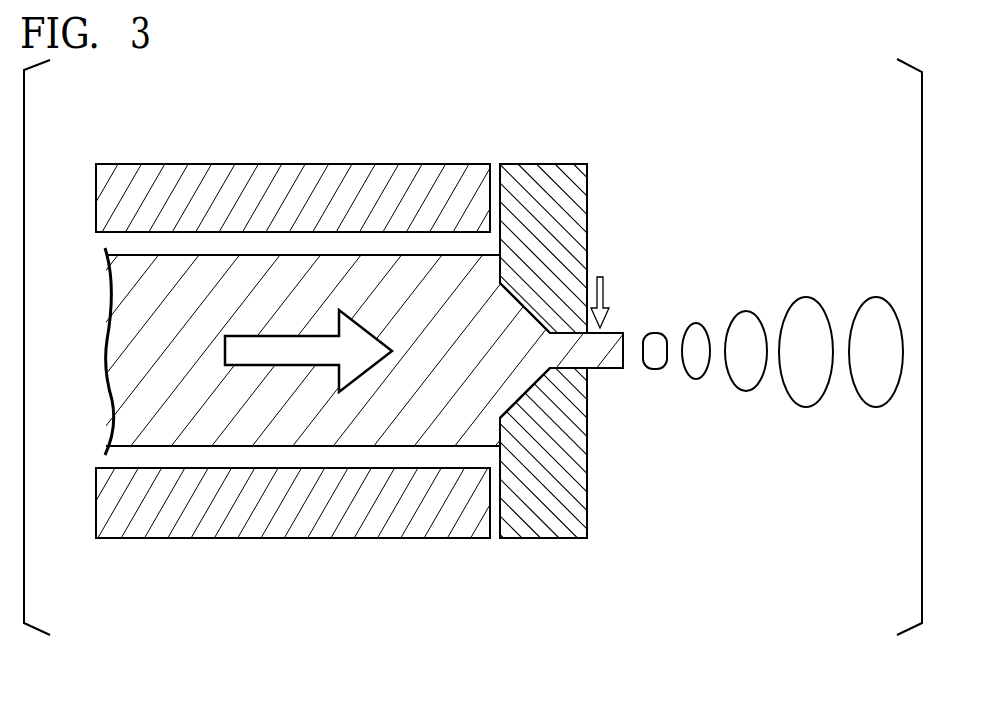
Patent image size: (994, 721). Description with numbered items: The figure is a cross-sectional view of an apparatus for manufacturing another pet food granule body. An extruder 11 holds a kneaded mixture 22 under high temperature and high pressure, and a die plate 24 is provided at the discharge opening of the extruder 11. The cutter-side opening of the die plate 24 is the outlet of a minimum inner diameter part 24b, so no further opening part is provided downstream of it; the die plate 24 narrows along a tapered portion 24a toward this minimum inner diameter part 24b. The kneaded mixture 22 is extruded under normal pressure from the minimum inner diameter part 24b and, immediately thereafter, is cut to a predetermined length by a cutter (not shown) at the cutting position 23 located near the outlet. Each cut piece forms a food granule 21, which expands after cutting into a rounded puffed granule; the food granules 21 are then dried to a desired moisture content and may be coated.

The extruder 11 is at (243, 175).
The food granule 21 is at (876, 406).
The kneaded mixture 22 is at (125, 343).
The cutting position 23 is at (604, 290).
The die plate 24 is at (555, 168).
The tapered inner surface of die 24a is at (516, 403).
The minimum inner diameter part 24b is at (575, 368).